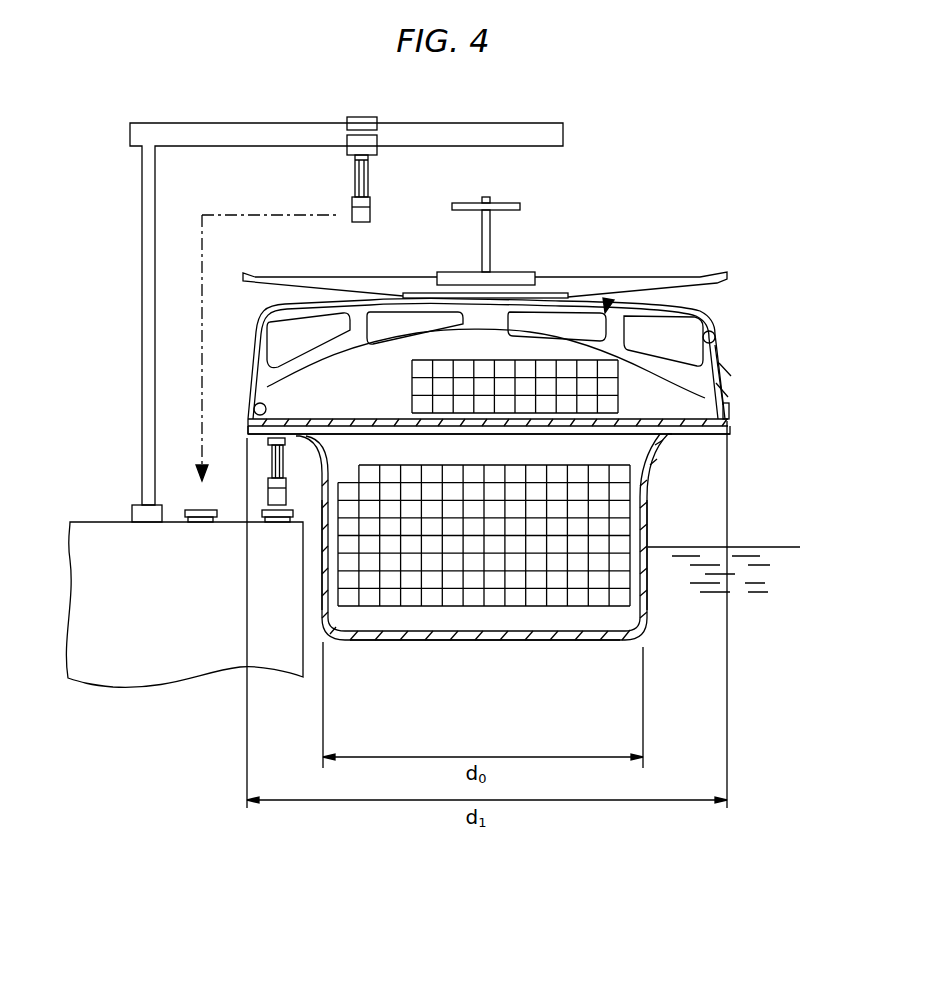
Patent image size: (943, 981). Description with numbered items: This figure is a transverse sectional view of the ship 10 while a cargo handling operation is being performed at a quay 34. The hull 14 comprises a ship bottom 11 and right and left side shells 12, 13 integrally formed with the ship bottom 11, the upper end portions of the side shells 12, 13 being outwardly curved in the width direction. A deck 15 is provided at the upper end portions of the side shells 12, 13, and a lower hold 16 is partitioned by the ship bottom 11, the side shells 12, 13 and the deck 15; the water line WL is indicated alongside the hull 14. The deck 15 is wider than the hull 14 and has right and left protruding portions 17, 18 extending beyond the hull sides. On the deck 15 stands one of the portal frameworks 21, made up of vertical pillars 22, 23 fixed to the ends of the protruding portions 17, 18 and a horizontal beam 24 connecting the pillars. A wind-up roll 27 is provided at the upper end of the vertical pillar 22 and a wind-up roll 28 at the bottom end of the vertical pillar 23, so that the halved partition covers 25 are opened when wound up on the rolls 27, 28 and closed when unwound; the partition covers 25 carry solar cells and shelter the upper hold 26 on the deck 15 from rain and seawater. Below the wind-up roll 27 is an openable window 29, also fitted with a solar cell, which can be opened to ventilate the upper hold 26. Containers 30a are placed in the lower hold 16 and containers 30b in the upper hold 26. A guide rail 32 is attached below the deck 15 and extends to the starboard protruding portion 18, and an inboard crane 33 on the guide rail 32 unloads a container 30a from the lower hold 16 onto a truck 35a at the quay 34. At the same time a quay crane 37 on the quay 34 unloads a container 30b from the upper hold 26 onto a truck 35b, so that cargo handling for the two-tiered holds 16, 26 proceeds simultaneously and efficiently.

The ship 10 is at (735, 300).
The ship bottom 11 is at (427, 641).
The side shell 12 is at (648, 515).
The side shell 13 is at (324, 568).
The hull 14 is at (664, 483).
The deck 15 is at (640, 414).
The lower hold 16 is at (602, 447).
The protruding portion 17 is at (731, 423).
The protruding portion 18 is at (248, 433).
The portal framework 21 is at (609, 298).
The vertical pillar 22 is at (733, 372).
The vertical pillar 23 is at (250, 385).
The horizontal beam 24 is at (475, 318).
The partition cover 25 is at (664, 284).
The upper hold 26 is at (417, 352).
The wind-up roll 27 is at (716, 337).
The wind-up roll 28 is at (254, 409).
The openable window 29 is at (728, 390).
The container 30a is at (268, 497).
The container 30b is at (545, 367).
The guide rail 32 is at (363, 432).
The inboard crane 33 is at (268, 482).
The quay 34 is at (123, 633).
The truck 35a is at (278, 517).
The truck 35b is at (197, 510).
The quay crane 37 is at (372, 205).
The water line WL is at (800, 545).